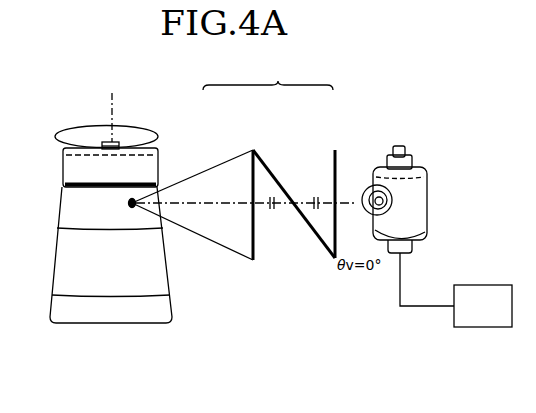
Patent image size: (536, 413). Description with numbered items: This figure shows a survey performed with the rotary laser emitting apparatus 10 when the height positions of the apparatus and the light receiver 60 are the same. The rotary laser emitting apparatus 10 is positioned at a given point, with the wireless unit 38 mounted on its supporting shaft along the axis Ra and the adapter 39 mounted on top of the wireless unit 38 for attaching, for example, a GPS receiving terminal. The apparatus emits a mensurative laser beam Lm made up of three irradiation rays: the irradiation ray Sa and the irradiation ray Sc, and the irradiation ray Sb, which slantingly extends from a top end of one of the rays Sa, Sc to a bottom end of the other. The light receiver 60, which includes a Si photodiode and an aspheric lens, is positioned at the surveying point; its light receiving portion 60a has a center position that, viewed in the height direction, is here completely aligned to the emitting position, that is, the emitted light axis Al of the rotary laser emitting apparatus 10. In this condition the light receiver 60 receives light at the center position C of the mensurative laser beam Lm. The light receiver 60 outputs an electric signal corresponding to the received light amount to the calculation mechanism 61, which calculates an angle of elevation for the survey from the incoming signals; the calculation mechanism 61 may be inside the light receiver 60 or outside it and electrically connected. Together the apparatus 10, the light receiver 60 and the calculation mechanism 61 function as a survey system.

The rotary laser emitting apparatus 10 is at (73, 124).
The wireless unit 38 is at (150, 167).
The adapter 39 is at (148, 147).
The axis Ra is at (113, 98).
The mensurative laser beam Lm is at (268, 74).
The irradiation ray Sa is at (251, 180).
The irradiation ray Sb is at (281, 171).
The irradiation ray Sc is at (333, 163).
The center position C is at (340, 203).
The emitted light axis Al is at (342, 206).
The light receiver 60 is at (420, 150).
The light receiving portion 60a is at (422, 232).
The calculation mechanism 61 is at (477, 327).